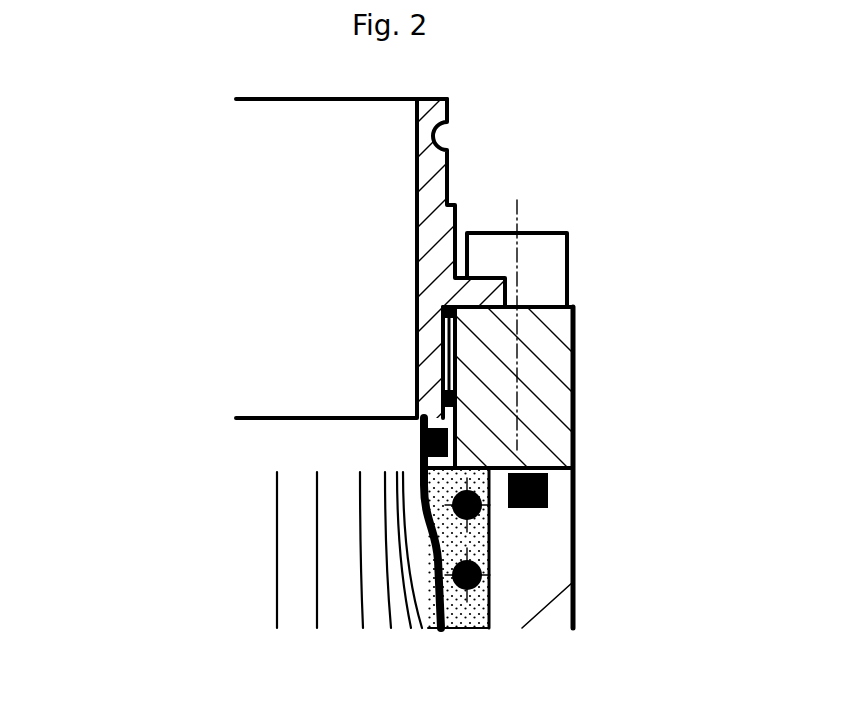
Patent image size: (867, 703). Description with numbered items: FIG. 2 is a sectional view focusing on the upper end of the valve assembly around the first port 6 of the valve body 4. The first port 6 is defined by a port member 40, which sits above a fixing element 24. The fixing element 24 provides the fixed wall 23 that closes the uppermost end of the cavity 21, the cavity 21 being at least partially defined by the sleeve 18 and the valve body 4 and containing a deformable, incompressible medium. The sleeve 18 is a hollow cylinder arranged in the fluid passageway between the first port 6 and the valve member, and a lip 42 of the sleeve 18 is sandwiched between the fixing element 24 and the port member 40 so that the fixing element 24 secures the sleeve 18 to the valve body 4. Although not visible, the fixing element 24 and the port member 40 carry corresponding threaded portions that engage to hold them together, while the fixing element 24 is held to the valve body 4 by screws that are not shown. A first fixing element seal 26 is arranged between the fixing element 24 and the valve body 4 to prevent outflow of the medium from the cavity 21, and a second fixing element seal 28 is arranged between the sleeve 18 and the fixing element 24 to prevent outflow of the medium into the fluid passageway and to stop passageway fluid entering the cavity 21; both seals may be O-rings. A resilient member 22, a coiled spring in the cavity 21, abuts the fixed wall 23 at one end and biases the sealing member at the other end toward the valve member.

The first port 6 is at (418, 98).
The port member 40 is at (432, 173).
The lip 42 is at (440, 412).
The fixing element 24 is at (542, 375).
The valve body 4 is at (553, 585).
The second fixing element seal 28 is at (425, 432).
The first fixing element seal 26 is at (550, 482).
The resilient member 22 is at (490, 507).
The cavity 21 is at (437, 563).
The fixed wall 23 is at (420, 473).
The sleeve 18 is at (470, 629).